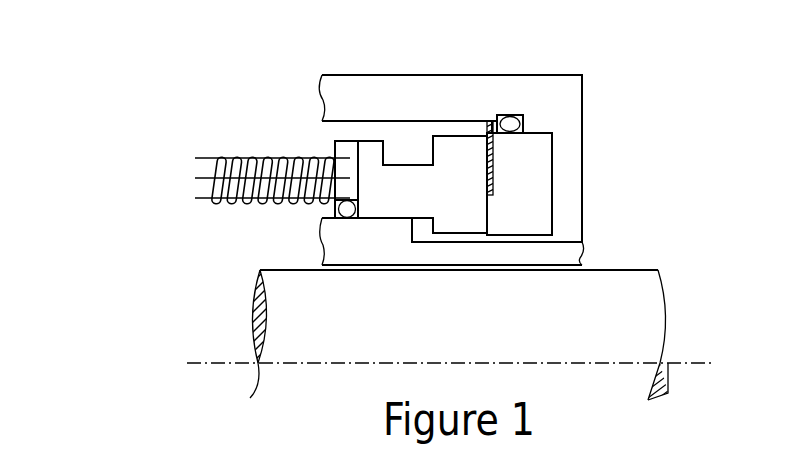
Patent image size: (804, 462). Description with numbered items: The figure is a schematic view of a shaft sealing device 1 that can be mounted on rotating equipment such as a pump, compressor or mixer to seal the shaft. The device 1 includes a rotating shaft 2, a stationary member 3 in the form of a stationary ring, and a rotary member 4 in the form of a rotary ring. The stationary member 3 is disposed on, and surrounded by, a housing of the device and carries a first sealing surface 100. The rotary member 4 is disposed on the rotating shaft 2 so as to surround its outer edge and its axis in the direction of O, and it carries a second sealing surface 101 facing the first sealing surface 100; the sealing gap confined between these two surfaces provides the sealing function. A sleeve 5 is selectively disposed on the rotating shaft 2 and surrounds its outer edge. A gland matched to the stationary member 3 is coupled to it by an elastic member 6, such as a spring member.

The shaft sealing device 1 is at (757, 68).
The rotating shaft 2 is at (626, 278).
The stationary member 3 is at (540, 149).
The rotary member 4 is at (405, 175).
The sleeve 5 is at (332, 242).
The elastic member 6 is at (262, 153).
The first sealing surface 100 is at (488, 218).
The second sealing surface 101 is at (485, 210).